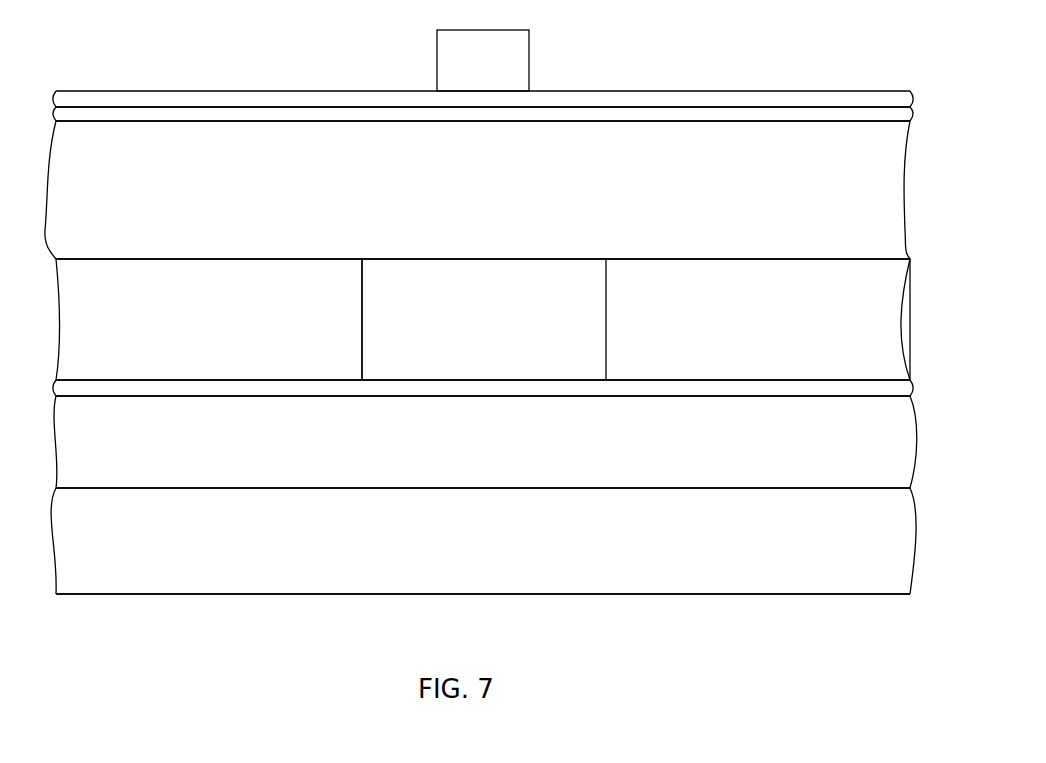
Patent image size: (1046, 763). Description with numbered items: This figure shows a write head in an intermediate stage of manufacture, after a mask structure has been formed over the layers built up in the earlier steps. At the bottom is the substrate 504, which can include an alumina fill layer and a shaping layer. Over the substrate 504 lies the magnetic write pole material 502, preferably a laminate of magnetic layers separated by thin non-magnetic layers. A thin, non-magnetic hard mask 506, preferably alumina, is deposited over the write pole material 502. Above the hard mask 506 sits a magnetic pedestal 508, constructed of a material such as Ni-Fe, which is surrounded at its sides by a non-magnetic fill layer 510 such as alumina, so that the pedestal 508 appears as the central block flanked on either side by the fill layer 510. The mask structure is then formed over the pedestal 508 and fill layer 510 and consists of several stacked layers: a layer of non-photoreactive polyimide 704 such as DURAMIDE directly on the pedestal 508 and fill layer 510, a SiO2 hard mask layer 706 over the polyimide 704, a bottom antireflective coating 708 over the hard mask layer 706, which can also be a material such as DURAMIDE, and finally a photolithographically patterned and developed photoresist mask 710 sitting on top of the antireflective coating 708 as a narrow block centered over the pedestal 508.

The magnetic write pole material 502 is at (531, 441).
The substrate 504 is at (531, 533).
The non-magnetic hard mask 506 is at (601, 388).
The magnetic pedestal 508 is at (529, 321).
The non-magnetic fill layer 510 is at (265, 313).
The non-photoreactive polyimide layer 704 is at (520, 190).
The SiO2 hard mask layer 706 is at (658, 113).
The bottom antireflective coating 708 is at (658, 99).
The photoresist mask 710 is at (513, 63).